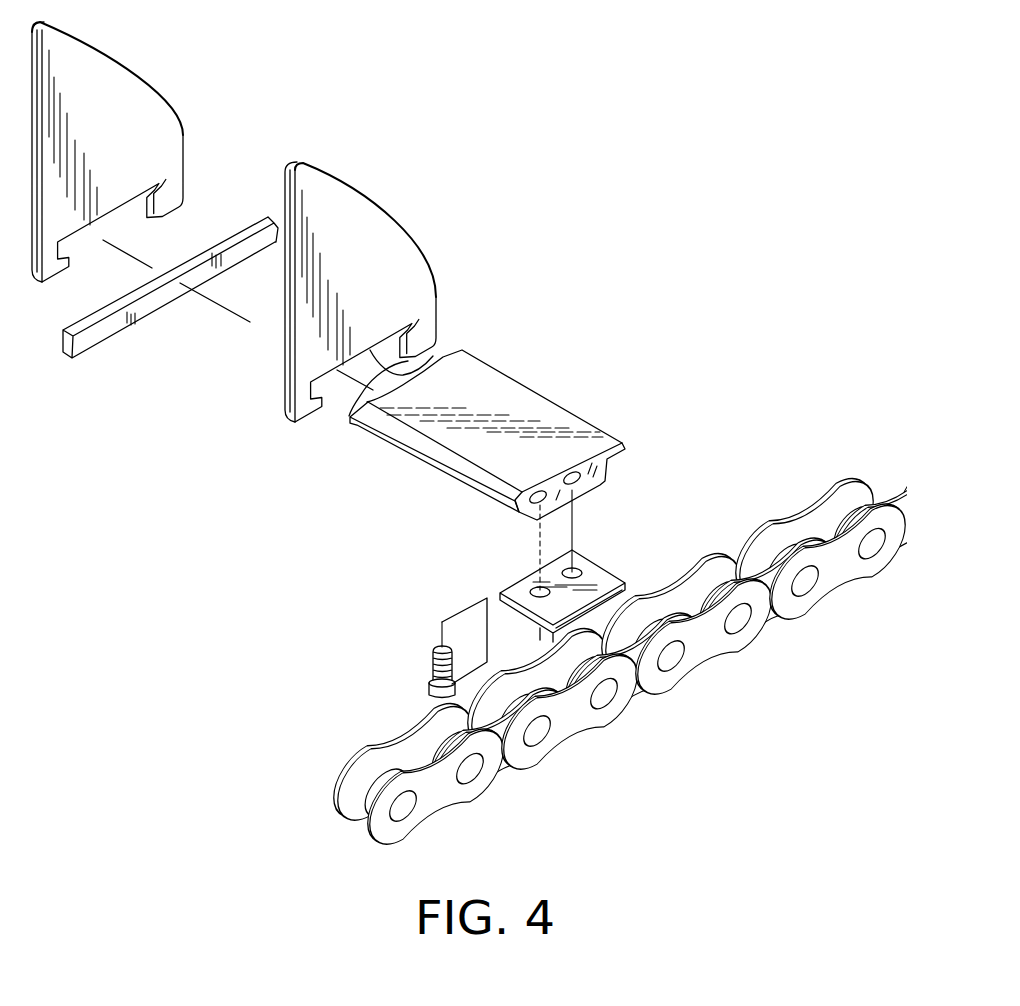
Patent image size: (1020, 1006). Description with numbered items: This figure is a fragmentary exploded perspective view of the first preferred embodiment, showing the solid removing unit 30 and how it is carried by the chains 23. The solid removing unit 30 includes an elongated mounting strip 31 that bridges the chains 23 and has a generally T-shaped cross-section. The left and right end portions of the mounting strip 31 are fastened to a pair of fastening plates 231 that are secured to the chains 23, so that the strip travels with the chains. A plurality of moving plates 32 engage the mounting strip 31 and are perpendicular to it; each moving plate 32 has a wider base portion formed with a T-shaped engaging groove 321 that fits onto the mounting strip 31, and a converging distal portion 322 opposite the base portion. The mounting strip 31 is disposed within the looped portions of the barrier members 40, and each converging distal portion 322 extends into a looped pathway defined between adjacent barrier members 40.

The chain 23 is at (829, 498).
The fastening plate 231 is at (598, 572).
The solid removing unit 30 is at (462, 358).
The mounting strip 31 is at (513, 402).
The moving plate 32 is at (421, 274).
The T-shaped engaging groove 321 is at (433, 356).
The converging distal portion 322 is at (332, 192).
The barrier member 40 is at (245, 212).